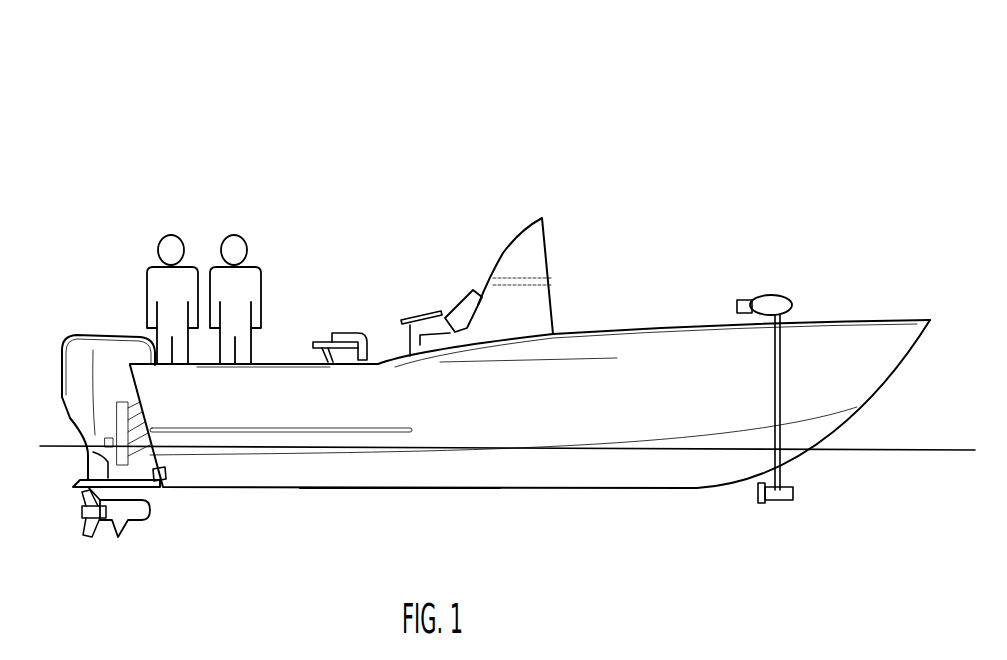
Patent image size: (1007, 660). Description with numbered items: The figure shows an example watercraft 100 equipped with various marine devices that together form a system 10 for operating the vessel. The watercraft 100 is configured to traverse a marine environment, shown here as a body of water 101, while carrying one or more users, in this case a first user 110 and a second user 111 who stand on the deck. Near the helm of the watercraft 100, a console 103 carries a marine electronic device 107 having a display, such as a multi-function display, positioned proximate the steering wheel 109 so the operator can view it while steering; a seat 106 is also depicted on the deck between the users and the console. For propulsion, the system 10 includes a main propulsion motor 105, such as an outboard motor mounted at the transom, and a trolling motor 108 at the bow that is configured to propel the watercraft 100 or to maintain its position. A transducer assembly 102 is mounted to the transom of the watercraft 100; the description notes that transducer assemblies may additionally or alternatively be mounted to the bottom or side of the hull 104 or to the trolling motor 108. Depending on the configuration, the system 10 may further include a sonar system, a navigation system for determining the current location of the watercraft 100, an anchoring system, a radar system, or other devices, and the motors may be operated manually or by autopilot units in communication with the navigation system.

The system 10 is at (590, 107).
The watercraft 100 is at (663, 332).
The body of water 101 is at (478, 557).
The transducer assembly 102 is at (157, 482).
The console 103 is at (495, 293).
The hull 104 is at (363, 472).
The main propulsion motor 105 is at (93, 335).
The seat 106 is at (337, 332).
The marine electronic device 107 is at (467, 293).
The trolling motor 108 is at (795, 490).
The steering wheel 109 is at (415, 317).
The first user 110 is at (173, 233).
The second user 111 is at (233, 233).